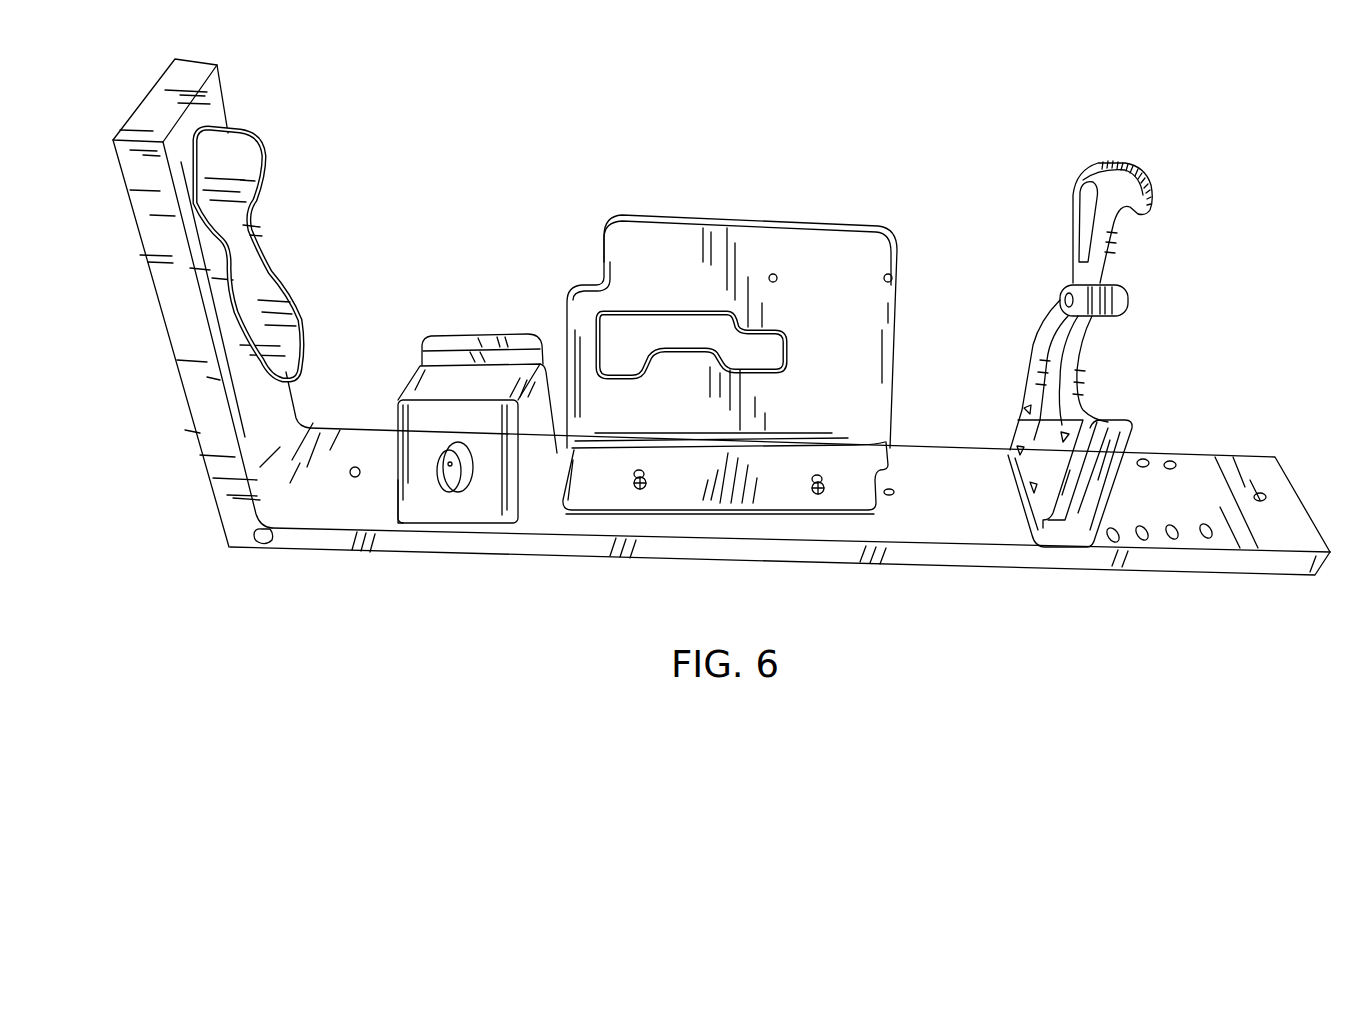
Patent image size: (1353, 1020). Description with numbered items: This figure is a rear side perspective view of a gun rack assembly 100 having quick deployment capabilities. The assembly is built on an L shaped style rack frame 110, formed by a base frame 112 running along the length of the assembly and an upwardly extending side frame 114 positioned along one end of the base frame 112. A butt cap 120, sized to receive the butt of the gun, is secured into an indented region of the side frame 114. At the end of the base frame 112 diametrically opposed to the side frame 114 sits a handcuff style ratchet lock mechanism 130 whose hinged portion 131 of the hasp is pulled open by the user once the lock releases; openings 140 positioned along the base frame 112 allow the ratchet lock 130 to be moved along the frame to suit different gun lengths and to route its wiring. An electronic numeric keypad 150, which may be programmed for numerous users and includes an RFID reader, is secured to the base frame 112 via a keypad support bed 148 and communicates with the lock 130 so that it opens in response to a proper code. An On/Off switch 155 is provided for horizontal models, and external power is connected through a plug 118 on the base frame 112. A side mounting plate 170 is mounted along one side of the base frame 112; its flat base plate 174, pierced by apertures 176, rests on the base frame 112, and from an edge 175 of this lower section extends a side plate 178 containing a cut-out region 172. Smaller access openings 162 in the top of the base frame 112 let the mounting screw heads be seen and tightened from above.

The gun rack assembly 100 is at (466, 604).
The rack frame 110 is at (230, 526).
The base frame 112 is at (693, 560).
The side frame 114 is at (198, 402).
The connected plug 118 is at (263, 542).
The butt cap 120 is at (245, 152).
The ratchet lock mechanism 130 is at (1092, 378).
The hinged portion 131 is at (1152, 200).
The openings 140 is at (1145, 468).
The keypad support bed 148 is at (412, 467).
The electronic numeric keypad 150 is at (447, 343).
The On/Off switch 155 is at (443, 483).
The access openings 162 is at (355, 466).
The side mounting plate 170 is at (790, 222).
The cut-out region 172 is at (621, 326).
The flat base plate 174 is at (838, 493).
The edge 175 is at (848, 453).
The apertures 176 is at (636, 486).
The side plate 178 is at (857, 327).